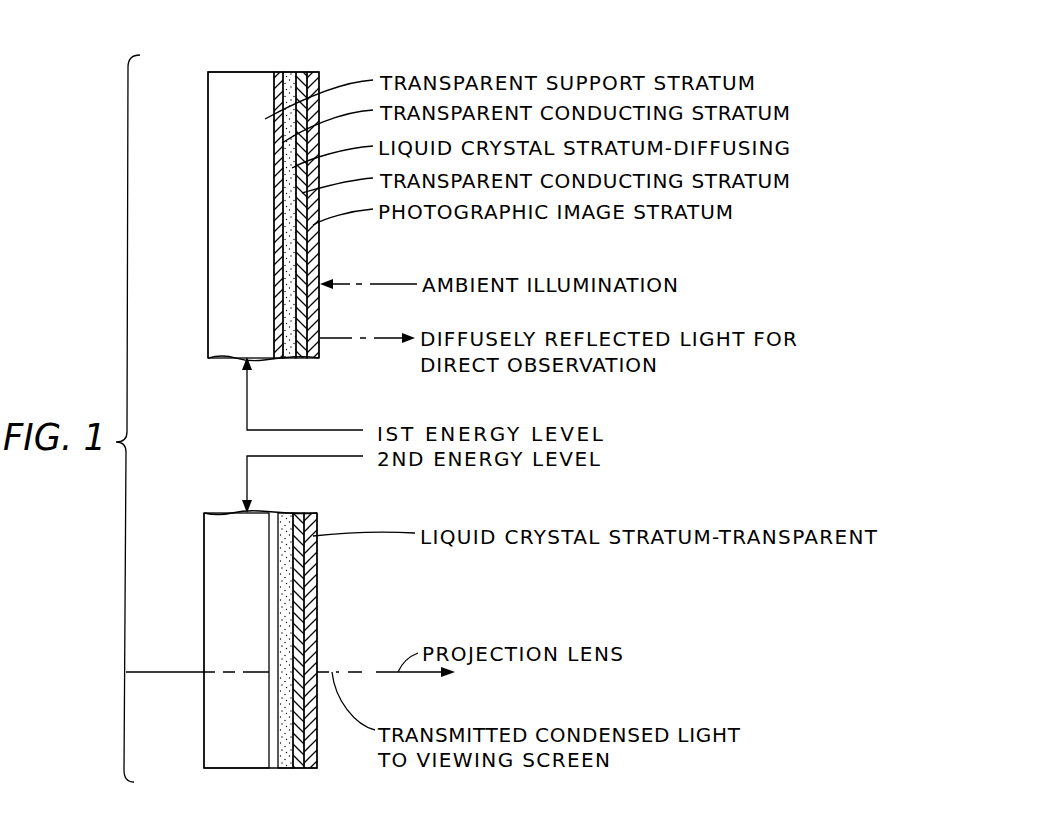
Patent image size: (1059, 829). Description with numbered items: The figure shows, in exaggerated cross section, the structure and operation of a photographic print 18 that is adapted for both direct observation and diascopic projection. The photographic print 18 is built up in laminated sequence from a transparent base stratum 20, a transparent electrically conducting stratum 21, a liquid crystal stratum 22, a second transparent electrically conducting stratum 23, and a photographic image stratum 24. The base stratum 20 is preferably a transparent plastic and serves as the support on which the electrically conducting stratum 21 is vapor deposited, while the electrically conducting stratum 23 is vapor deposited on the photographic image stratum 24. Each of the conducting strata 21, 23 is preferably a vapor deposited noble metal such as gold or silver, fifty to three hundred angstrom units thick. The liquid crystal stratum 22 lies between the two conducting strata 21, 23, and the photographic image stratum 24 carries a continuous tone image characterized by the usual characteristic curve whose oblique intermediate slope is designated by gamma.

The photographic print 18 is at (205, 134).
The transparent base stratum 20 is at (225, 70).
The transparent electrically conducting stratum 21 is at (280, 72).
The liquid crystal stratum 22 is at (290, 71).
The transparent electrically conducting stratum 23 is at (302, 71).
The photographic image stratum 24 is at (319, 70).